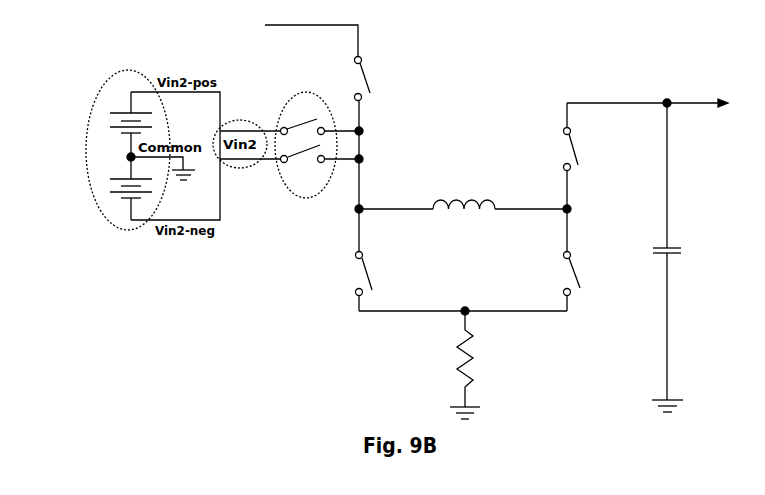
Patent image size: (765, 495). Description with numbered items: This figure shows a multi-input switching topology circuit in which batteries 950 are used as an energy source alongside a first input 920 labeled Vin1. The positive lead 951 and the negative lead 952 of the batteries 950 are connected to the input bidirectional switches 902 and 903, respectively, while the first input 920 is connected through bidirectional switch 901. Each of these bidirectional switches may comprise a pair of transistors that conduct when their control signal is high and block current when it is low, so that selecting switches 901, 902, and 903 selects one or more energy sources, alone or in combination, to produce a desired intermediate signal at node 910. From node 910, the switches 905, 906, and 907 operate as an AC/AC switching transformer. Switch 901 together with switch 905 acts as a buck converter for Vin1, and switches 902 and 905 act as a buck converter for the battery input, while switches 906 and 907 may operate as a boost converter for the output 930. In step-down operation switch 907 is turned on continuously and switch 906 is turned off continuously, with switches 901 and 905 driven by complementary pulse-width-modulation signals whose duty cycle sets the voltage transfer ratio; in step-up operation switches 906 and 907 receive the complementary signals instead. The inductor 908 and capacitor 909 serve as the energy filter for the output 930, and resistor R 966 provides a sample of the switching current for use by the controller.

The batteries 950 is at (125, 71).
The positive lead 951 is at (127, 113).
The negative lead 952 is at (125, 202).
The first input Vin1 920 is at (265, 30).
The bidirectional switch 901 is at (370, 71).
The bidirectional switch 902 is at (284, 127).
The bidirectional switch 903 is at (300, 153).
The node 910 is at (383, 206).
The inductor 908 is at (461, 211).
The bidirectional switch 907 is at (578, 165).
The capacitor 909 is at (674, 243).
The output Vout 930 is at (680, 102).
The bidirectional switch 905 is at (357, 273).
The bidirectional switch 906 is at (572, 292).
The resistor R 966 is at (474, 345).